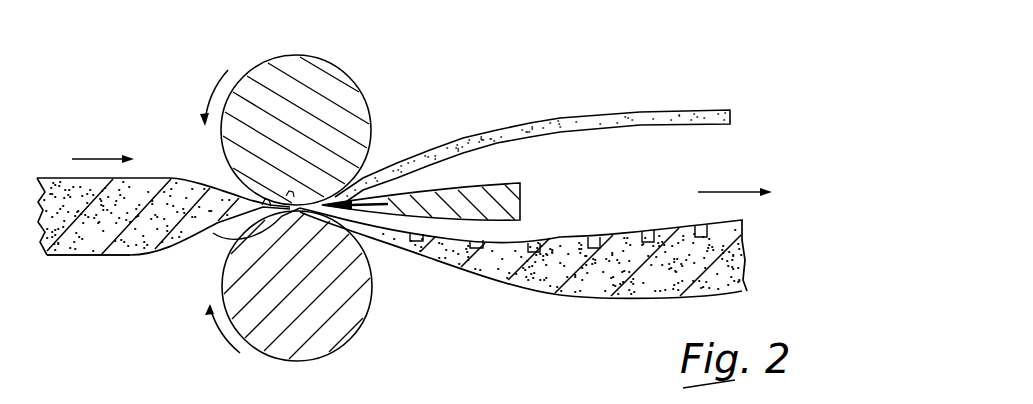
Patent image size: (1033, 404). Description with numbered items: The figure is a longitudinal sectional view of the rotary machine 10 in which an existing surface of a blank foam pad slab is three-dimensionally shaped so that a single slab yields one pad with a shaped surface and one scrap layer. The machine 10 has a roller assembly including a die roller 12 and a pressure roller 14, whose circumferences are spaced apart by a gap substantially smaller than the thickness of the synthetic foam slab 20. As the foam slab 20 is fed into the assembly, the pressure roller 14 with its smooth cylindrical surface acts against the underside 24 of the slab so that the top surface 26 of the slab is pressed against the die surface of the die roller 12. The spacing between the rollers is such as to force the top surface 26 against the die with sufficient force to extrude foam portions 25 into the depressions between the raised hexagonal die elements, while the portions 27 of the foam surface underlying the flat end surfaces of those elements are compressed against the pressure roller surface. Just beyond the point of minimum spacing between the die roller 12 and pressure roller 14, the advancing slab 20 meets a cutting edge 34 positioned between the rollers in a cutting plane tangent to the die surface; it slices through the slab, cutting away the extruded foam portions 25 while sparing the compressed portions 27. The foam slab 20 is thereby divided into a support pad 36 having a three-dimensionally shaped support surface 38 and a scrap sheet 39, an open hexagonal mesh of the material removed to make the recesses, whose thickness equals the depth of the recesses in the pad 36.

The rotary machine 10 is at (380, 158).
The die roller 12 is at (352, 76).
The pressure roller 14 is at (357, 342).
The synthetic foam slab 20 is at (86, 244).
The underside of the slab 24 is at (133, 258).
The extruded foam portions 25 is at (238, 239).
The top surface of the slab 26 is at (53, 177).
The compressed foam portions 27 is at (218, 196).
The cutting edge 34 is at (335, 232).
The support pad 36 is at (730, 276).
The three-dimensionally shaped support surface 38 is at (606, 234).
The scrap sheet 39 is at (660, 112).